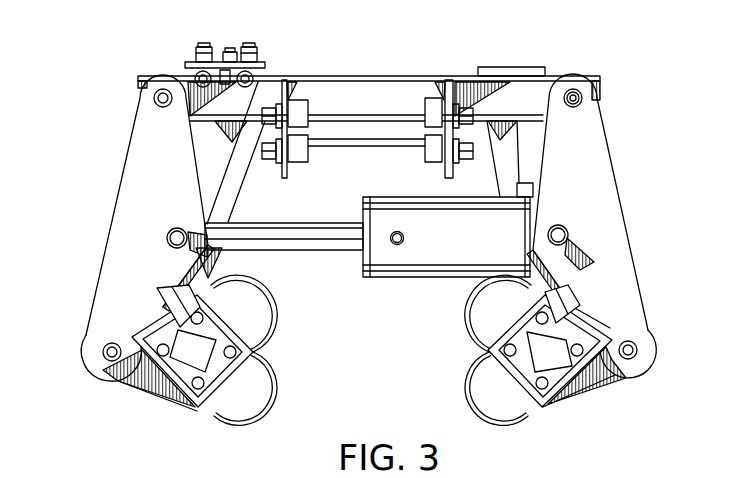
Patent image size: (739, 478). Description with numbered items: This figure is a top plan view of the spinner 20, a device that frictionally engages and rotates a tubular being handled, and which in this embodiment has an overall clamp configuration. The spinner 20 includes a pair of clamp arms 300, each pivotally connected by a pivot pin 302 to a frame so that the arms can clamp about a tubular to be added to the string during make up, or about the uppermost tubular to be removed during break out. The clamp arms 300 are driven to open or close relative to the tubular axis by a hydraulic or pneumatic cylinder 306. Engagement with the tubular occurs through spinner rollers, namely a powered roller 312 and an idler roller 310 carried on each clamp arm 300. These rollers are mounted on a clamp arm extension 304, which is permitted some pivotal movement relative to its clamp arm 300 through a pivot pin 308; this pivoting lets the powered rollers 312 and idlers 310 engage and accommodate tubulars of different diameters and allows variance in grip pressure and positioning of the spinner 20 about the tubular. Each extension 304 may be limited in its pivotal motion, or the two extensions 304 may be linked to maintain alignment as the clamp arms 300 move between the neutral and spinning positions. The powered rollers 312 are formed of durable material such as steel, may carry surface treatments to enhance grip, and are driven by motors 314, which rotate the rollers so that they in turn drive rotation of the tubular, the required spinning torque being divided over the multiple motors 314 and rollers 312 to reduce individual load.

The spinner 20 is at (435, 60).
The clamp arm 300 is at (133, 175).
The pivot pin 302 is at (162, 89).
The clamp arm extension 304 is at (153, 388).
The hydraulic or pneumatic cylinder 306 is at (410, 260).
The pivot pin 308 is at (103, 351).
The idler roller 310 is at (272, 403).
The powered roller 312 is at (273, 330).
The motor 314 is at (163, 307).